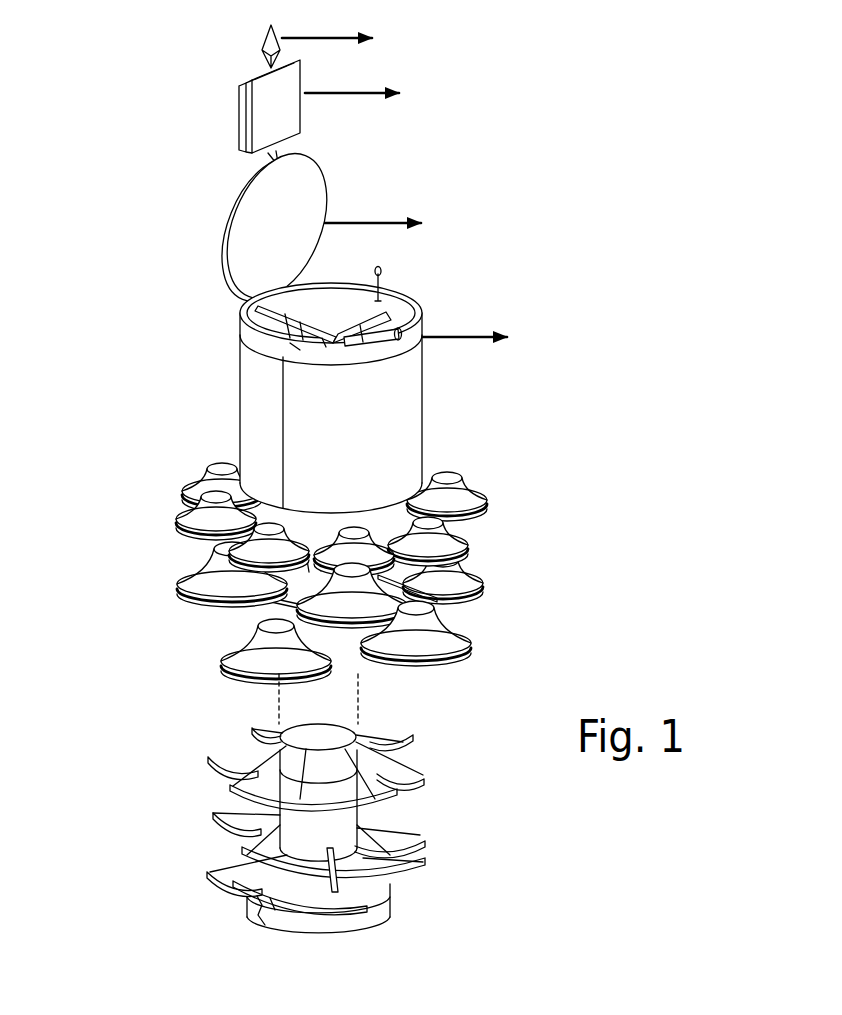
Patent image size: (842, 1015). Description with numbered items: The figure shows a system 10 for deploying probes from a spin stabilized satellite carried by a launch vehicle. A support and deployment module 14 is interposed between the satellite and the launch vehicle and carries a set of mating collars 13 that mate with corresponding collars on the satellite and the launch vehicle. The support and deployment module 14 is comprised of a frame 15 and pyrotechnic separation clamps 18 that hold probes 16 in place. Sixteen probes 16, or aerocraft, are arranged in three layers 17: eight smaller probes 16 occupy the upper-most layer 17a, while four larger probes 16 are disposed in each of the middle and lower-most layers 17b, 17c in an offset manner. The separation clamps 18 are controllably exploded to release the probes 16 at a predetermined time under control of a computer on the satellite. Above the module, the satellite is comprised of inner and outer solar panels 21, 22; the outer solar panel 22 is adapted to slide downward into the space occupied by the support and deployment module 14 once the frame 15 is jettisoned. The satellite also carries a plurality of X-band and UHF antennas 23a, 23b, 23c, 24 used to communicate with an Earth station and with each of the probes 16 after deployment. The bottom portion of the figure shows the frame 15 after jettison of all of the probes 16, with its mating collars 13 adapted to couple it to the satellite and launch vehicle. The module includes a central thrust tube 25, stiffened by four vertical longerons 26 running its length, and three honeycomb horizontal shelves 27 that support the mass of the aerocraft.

The system 10 is at (90, 80).
The mating collars 13 is at (390, 680).
The support and deployment module 14 is at (134, 486).
The frame 15 is at (206, 620).
The probes 16 is at (152, 538).
The layers 17 is at (575, 457).
The upper-most layer 17a is at (505, 492).
The middle layer 17b is at (505, 565).
The lower-most layer 17c is at (494, 637).
The pyrotechnic separation clamps 18 is at (410, 789).
The inner solar panel 21 is at (248, 340).
The outer solar panel 22 is at (248, 400).
The antenna 23a is at (237, 240).
The antenna 23b is at (262, 52).
The antenna 23c is at (402, 328).
The antenna 24 is at (240, 122).
The central thrust tube 25 is at (322, 733).
The vertical longerons 26 is at (327, 920).
The honeycomb horizontal shelves 27 is at (212, 813).